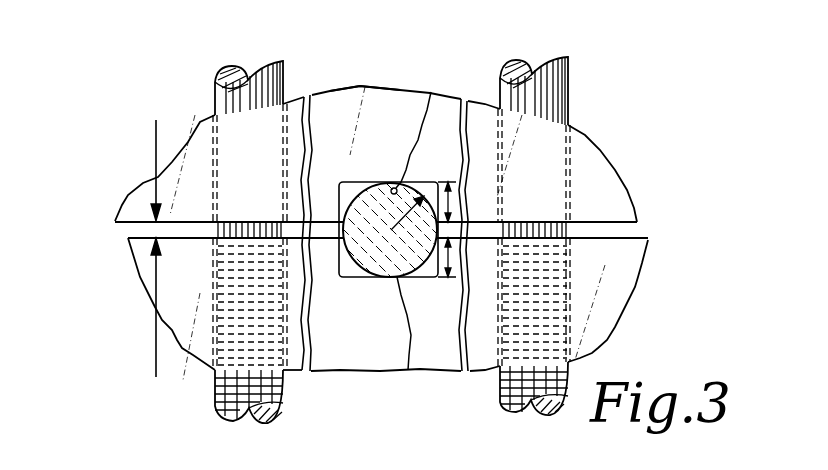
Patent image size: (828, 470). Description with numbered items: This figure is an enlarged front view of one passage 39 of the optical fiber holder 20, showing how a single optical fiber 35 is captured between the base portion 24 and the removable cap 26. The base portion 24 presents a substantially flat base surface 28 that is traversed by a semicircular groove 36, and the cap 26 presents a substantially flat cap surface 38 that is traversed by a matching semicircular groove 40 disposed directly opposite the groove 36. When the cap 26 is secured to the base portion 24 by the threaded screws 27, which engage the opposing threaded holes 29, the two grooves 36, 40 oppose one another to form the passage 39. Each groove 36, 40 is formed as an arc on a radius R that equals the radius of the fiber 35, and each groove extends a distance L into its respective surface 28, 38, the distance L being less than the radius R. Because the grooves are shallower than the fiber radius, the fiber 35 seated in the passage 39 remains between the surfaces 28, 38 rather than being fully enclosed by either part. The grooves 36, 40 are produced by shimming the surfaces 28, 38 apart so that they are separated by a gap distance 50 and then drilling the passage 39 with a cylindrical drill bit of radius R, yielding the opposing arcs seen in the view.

The optical fiber holder 20 is at (202, 48).
The base portion 24 is at (366, 369).
The removable cap 26 is at (378, 94).
The threaded screws 27 is at (215, 96).
The base surface 28 is at (647, 237).
The threaded holes 29 is at (222, 338).
The optical fiber 35 is at (382, 241).
The grooves of base surface 36 is at (408, 370).
The cap surface 38 is at (114, 224).
The passage 39 is at (339, 212).
The grooves of cap surface 40 is at (431, 92).
The gap distance 50 is at (156, 150).
The radius R is at (407, 213).
The groove depth distance L is at (446, 229).